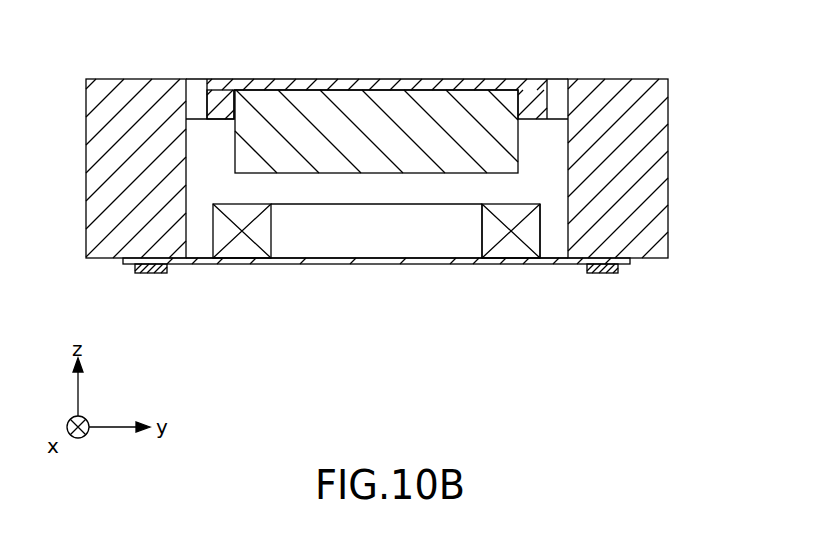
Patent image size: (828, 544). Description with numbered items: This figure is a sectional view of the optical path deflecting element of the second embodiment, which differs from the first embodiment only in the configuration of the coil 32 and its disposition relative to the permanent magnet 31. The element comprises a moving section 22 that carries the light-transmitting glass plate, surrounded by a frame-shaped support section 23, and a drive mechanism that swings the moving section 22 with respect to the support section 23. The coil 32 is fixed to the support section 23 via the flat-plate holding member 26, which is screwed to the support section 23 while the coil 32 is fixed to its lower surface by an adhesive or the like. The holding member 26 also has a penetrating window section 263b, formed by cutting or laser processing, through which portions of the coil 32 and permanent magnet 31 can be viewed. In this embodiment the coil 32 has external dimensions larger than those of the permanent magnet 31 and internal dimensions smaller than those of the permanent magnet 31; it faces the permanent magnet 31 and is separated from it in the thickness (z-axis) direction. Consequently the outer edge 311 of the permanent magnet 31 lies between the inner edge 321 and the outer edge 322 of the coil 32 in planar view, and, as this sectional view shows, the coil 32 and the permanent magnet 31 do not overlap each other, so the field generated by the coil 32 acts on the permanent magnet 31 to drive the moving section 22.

The moving section 22 is at (533, 97).
The support section 23 is at (655, 177).
The holding member 26 is at (326, 265).
The window section 263b is at (267, 265).
The permanent magnet 31 is at (434, 100).
The outer edge of the permanent magnet 311 is at (226, 120).
The coil 32 is at (516, 247).
The inner edge of the coil 321 is at (482, 235).
The outer edge of the coil 322 is at (540, 235).